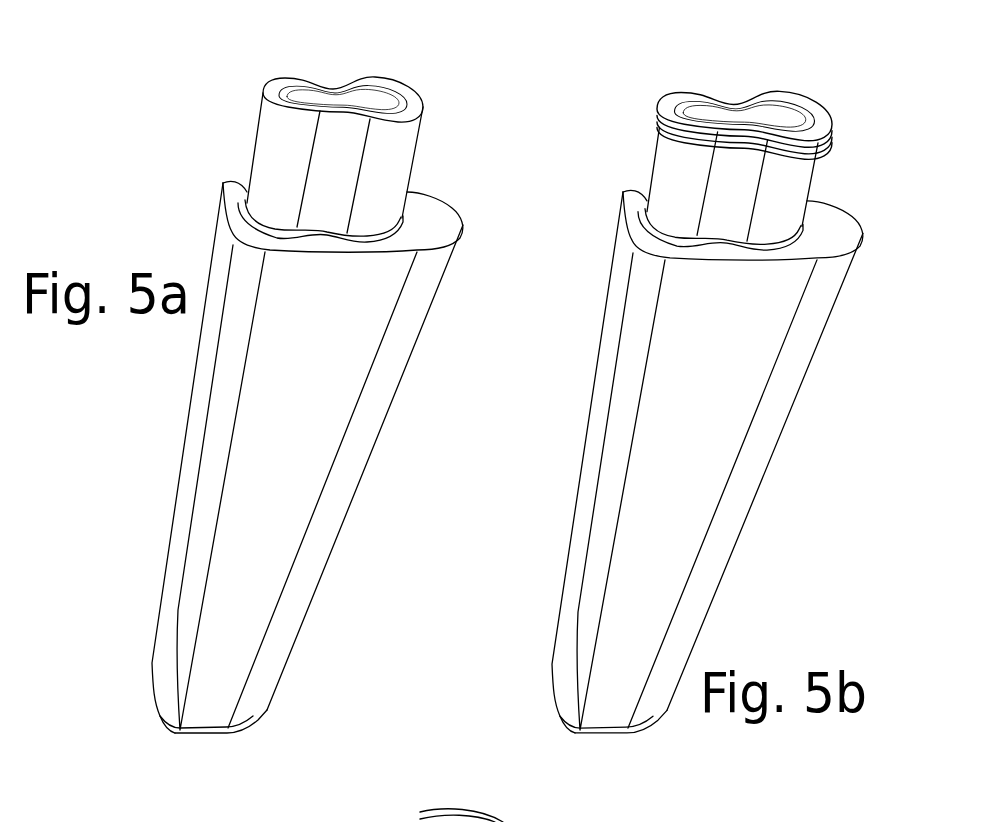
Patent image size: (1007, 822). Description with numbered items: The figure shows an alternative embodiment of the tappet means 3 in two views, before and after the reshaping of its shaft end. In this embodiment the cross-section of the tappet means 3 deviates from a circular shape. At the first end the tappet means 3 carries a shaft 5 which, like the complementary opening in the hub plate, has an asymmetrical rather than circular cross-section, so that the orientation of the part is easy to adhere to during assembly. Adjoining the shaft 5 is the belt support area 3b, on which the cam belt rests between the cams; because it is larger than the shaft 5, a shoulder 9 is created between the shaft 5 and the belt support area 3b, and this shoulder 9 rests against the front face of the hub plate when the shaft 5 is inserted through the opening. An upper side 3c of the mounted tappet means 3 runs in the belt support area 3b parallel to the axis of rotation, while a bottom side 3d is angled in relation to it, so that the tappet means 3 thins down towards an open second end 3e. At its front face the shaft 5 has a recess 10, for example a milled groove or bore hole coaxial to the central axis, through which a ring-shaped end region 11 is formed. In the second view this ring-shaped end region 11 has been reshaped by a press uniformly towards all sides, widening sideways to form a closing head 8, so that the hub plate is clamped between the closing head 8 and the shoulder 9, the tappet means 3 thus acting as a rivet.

In FIG. 5A, the tappet means 3 is at (242, 462).
In FIG. 5B, the tappet means 3 is at (649, 465).
In FIG. 5A, the belt support area 3b is at (215, 421).
In FIG. 5B, the belt support area 3b is at (600, 507).
In FIG. 5A, the upper side 3c is at (160, 609).
In FIG. 5B, the upper side 3c is at (593, 398).
In FIG. 5A, the bottom side 3d is at (288, 675).
In FIG. 5B, the bottom side 3d is at (764, 501).
In FIG. 5A, the open second end 3e is at (153, 722).
In FIG. 5B, the open second end 3e is at (553, 737).
In FIG. 5A, the shaft 5 is at (277, 150).
In FIG. 5B, the shaft 5 is at (670, 173).
In FIG. 5B, the closing head 8 is at (777, 97).
In FIG. 5A, the shoulder 9 is at (433, 200).
In FIG. 5B, the shoulder 9 is at (834, 216).
In FIG. 5A, the recess 10 is at (303, 97).
In FIG. 5A, the ring-shaped end region 11 is at (394, 75).
In FIG. 5B, the ring-shaped end region 11 is at (679, 95).